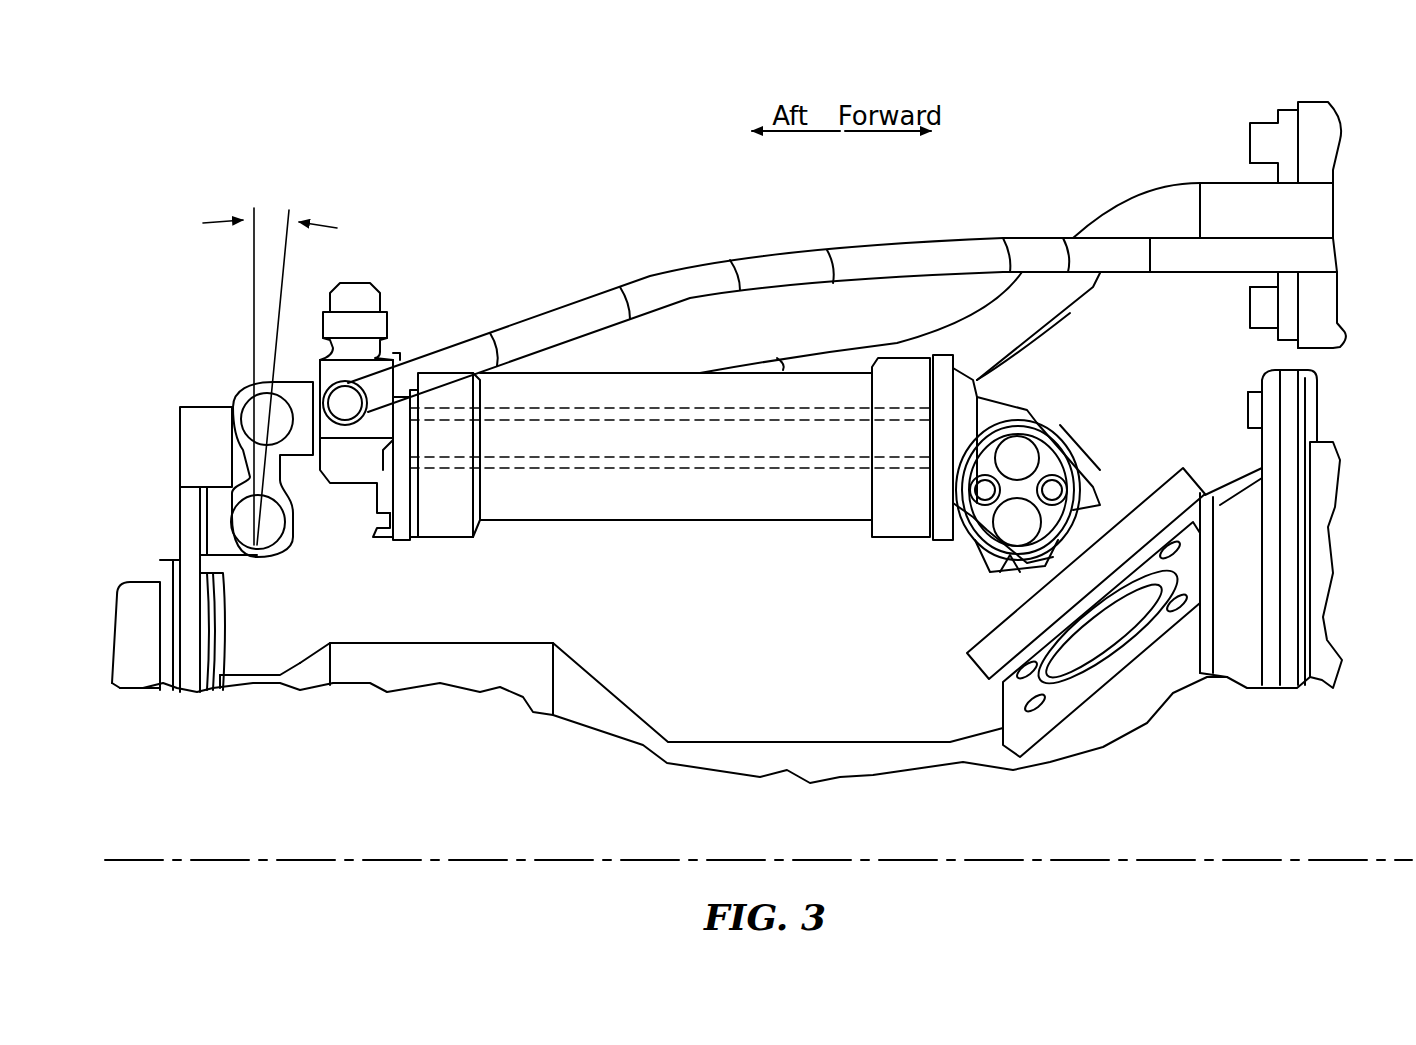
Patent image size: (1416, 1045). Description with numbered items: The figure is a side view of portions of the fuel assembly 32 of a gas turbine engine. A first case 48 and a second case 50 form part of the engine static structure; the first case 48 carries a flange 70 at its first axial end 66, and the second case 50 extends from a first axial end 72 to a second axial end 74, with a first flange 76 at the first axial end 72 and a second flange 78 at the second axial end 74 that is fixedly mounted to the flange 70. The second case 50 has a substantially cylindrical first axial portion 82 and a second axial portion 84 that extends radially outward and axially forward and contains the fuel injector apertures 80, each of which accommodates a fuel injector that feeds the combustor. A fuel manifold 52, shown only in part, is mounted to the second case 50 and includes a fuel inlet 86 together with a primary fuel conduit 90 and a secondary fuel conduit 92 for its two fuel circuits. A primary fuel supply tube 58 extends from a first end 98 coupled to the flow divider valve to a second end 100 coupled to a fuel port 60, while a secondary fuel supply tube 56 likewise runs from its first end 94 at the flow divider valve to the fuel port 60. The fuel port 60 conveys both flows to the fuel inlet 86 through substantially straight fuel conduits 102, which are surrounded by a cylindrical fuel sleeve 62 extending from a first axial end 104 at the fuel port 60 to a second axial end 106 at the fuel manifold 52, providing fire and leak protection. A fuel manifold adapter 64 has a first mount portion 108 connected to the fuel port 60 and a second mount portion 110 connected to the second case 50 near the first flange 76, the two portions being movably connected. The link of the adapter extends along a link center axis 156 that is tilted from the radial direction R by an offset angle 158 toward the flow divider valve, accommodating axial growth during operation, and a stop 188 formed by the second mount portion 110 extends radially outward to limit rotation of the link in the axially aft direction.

The fuel assembly 32 is at (1232, 78).
The first case 48 is at (1320, 530).
The second case 50 is at (872, 755).
The fuel manifold 52 is at (1053, 463).
The secondary fuel supply tube 56 is at (992, 318).
The primary fuel supply tube 58 is at (1022, 250).
The fuel port 60 is at (373, 430).
The fuel sleeve 62 is at (567, 378).
The fuel manifold adapter 64 is at (172, 434).
The first axial end of first case 66 is at (1314, 712).
The flange 70 is at (1290, 577).
The first axial end of second case 72 is at (190, 708).
The second axial end of second case 74 is at (1268, 712).
The first flange 76 is at (167, 672).
The second flange 78 is at (1270, 433).
The fuel injector apertures 80 is at (1118, 638).
The first axial portion 82 is at (728, 690).
The second axial portion 84 is at (1197, 558).
The fuel inlet 86 is at (1095, 487).
The primary fuel conduit 90 is at (1013, 522).
The secondary fuel conduit 92 is at (1017, 457).
The first end of secondary fuel supply tube 94 is at (1328, 207).
The first end of primary fuel supply tube 98 is at (1320, 253).
The second end of primary fuel supply tube 100 is at (363, 397).
The fuel conduits 102 is at (707, 413).
The first axial end of fuel sleeve 104 is at (385, 540).
The second axial end of fuel sleeve 106 is at (980, 388).
The first mount portion 108 is at (233, 395).
The second mount portion 110 is at (264, 568).
The link center axis 156 is at (283, 272).
The offset angle 158 is at (313, 222).
The stop 188 is at (197, 422).
The radial direction R is at (253, 252).